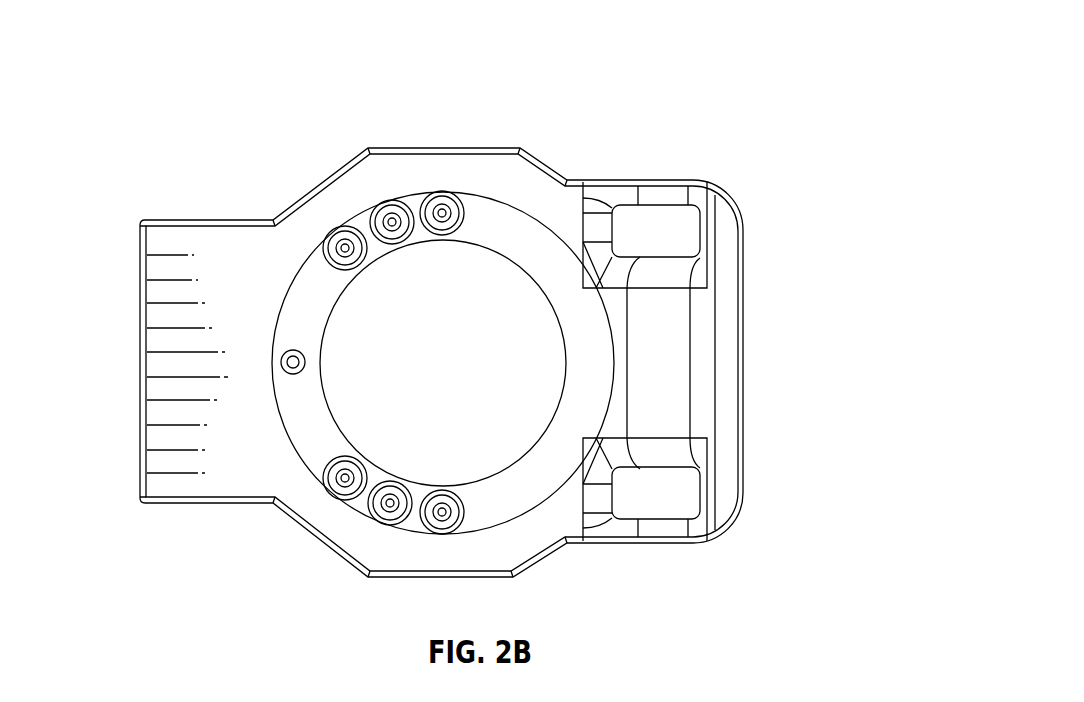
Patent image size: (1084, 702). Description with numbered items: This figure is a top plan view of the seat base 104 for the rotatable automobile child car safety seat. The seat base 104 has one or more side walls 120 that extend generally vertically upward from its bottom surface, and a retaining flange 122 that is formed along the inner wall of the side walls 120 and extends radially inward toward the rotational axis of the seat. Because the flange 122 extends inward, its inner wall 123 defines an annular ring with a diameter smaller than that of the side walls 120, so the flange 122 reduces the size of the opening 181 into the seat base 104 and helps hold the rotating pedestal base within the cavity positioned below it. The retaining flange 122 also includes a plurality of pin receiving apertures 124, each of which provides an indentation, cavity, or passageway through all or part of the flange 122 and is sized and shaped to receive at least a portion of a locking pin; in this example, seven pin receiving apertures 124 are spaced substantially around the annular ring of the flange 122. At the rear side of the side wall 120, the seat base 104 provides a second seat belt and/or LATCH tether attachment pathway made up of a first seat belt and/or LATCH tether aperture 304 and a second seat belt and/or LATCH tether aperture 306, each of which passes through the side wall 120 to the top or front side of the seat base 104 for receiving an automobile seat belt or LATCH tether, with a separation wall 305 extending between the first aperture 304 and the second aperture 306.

The seat base 104 is at (725, 61).
The side wall 120 is at (352, 212).
The retaining flange 122 is at (512, 498).
The inner wall 123 is at (567, 358).
The pin receiving aperture 124 is at (305, 360).
The opening 181 is at (499, 285).
The first seat belt and/or LATCH tether aperture 304 is at (663, 222).
The separation wall 305 is at (672, 345).
The second seat belt and/or LATCH tether aperture 306 is at (683, 483).